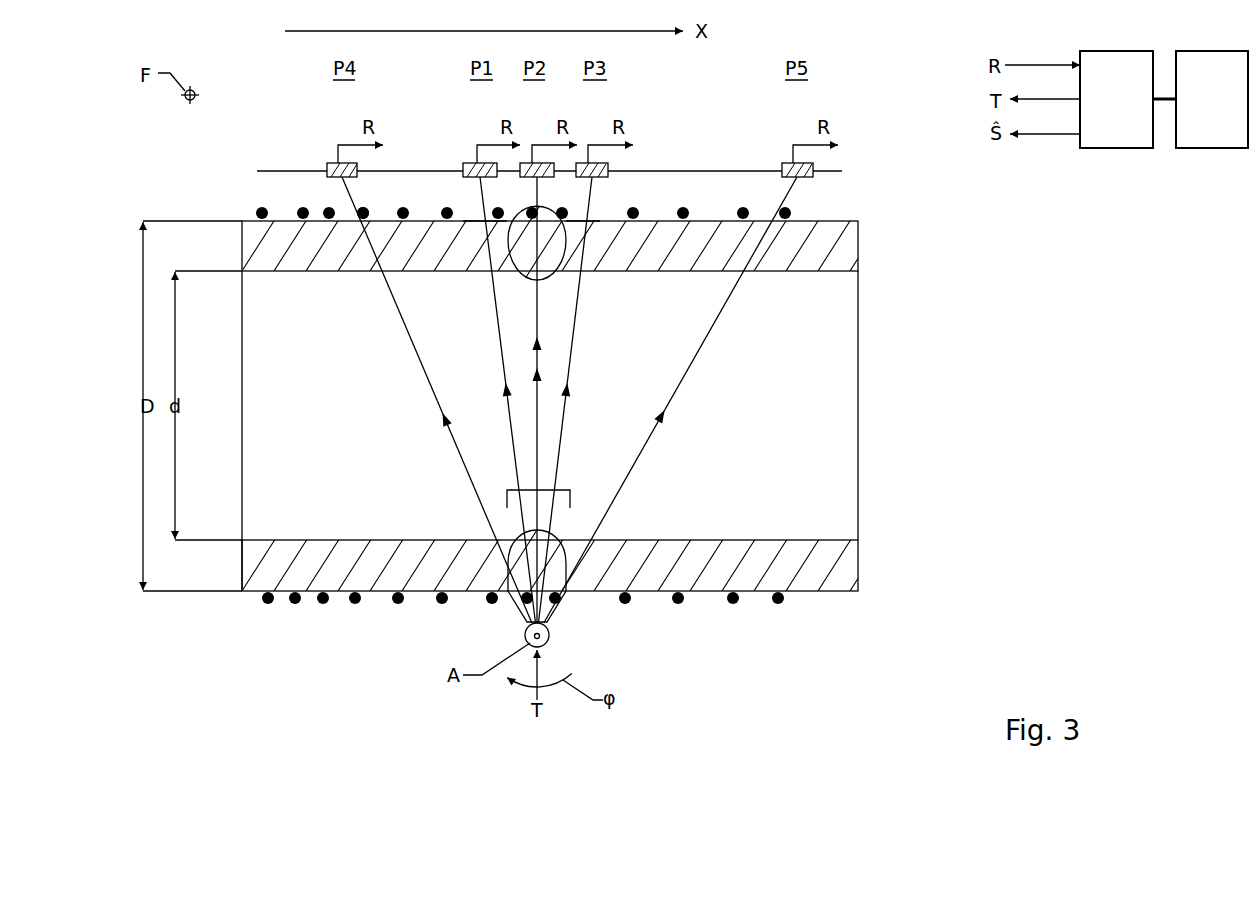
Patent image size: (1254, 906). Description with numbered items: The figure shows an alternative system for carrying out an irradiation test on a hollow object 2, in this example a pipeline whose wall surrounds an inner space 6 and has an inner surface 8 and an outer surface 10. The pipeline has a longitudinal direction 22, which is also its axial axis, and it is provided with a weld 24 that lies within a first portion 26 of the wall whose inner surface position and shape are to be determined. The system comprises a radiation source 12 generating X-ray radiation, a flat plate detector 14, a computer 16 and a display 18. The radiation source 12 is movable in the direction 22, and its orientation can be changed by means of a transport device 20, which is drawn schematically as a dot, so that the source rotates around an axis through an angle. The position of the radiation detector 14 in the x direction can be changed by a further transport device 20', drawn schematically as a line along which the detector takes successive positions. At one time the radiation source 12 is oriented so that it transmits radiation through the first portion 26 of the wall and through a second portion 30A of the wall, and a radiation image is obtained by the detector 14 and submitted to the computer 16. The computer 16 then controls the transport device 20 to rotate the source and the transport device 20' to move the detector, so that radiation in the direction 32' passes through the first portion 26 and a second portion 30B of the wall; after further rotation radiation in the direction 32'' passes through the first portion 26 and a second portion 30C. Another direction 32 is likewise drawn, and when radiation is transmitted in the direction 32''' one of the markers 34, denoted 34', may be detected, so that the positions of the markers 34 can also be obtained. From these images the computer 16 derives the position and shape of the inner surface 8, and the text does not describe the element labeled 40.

The hollow object 2 is at (268, 407).
The inner space 6 is at (339, 416).
The inner surface 8 is at (848, 271).
The outer surface 10 is at (252, 591).
The radiation source 12 is at (548, 637).
The flat plate detector 14 is at (785, 163).
The computer 16 is at (1128, 108).
The display 18 is at (1224, 108).
The transport device 20 is at (590, 658).
The transport device 20' is at (575, 155).
The longitudinal direction 22 is at (762, 403).
The weld 24 is at (585, 535).
The first portion of the wall 26 is at (553, 490).
The second portion of the wall 30A is at (485, 253).
The second portion of the wall 30B is at (522, 252).
The second portion of the wall 30C is at (590, 252).
The radiation direction 32 is at (499, 400).
The radiation direction 32' is at (555, 400).
The radiation direction 32'' is at (582, 400).
The radiation direction 32''' is at (437, 400).
The markers 34 is at (523, 386).
The marker 34' is at (384, 161).
The lower wall coating 40 is at (845, 564).